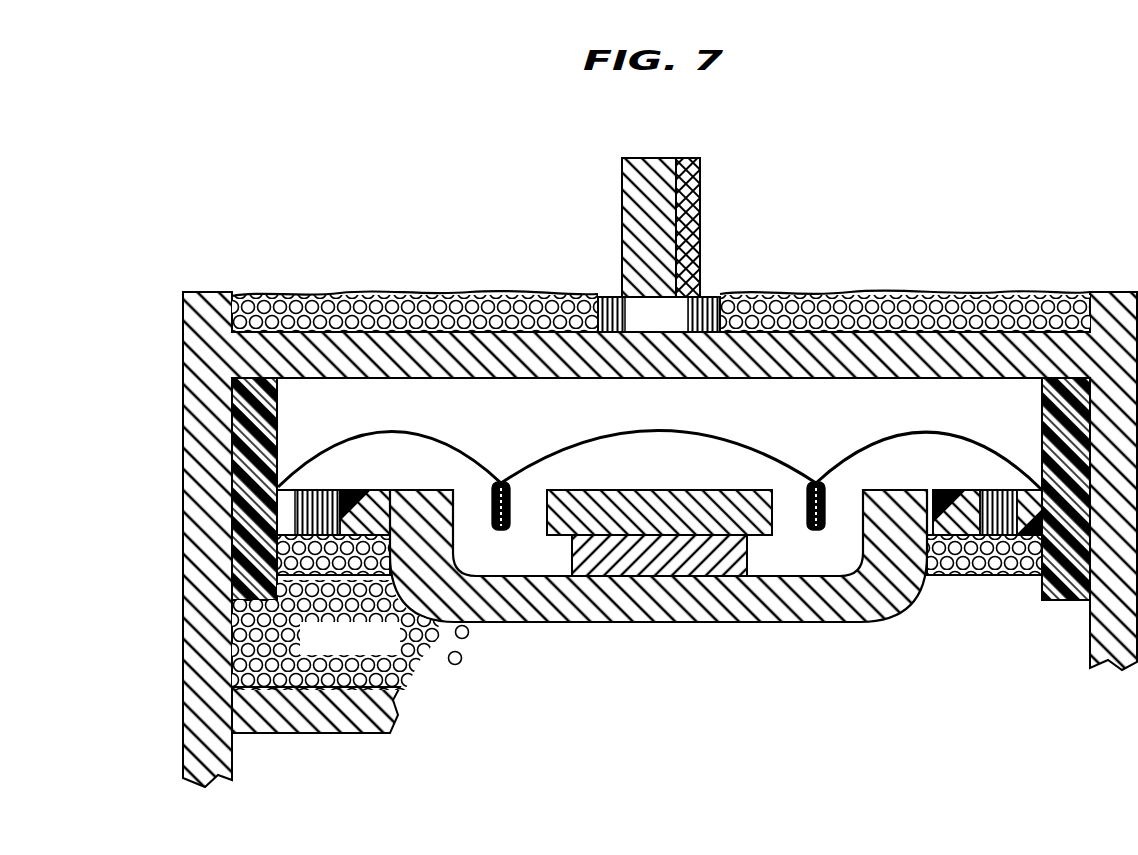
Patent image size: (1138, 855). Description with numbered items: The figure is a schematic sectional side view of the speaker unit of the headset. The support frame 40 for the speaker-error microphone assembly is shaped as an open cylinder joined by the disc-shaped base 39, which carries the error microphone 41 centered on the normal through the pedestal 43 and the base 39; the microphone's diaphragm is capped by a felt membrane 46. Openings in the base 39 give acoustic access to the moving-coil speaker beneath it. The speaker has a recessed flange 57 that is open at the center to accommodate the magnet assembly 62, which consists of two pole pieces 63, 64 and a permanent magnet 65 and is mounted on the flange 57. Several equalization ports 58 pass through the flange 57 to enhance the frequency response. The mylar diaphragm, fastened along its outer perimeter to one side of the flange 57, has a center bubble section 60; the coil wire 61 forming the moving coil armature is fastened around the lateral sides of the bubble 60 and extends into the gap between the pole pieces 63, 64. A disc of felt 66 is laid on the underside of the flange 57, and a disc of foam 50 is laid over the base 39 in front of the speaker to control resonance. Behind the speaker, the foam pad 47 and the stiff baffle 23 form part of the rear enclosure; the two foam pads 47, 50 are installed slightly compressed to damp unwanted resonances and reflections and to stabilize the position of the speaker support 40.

The baffle 23 is at (318, 735).
The base 39 is at (415, 380).
The support frame 40 is at (631, 549).
The error microphone 41 is at (622, 192).
The pedestal 43 is at (712, 297).
The felt membrane 46 is at (700, 178).
The foam pad 47 is at (470, 655).
The foam pad 50 is at (373, 295).
The flange 57 is at (357, 502).
The equalization ports 58 is at (1000, 500).
The center bubble section 60 is at (672, 433).
The coil wire 61 is at (514, 495).
The magnet assembly 62 is at (659, 566).
The pole piece 63 is at (625, 497).
The pole piece 64 is at (890, 598).
The permanent magnet 65 is at (697, 557).
The felt disc 66 is at (262, 545).